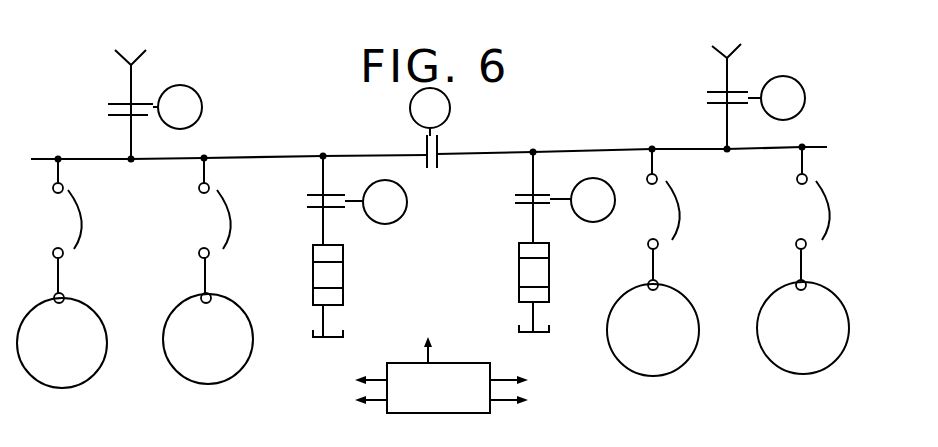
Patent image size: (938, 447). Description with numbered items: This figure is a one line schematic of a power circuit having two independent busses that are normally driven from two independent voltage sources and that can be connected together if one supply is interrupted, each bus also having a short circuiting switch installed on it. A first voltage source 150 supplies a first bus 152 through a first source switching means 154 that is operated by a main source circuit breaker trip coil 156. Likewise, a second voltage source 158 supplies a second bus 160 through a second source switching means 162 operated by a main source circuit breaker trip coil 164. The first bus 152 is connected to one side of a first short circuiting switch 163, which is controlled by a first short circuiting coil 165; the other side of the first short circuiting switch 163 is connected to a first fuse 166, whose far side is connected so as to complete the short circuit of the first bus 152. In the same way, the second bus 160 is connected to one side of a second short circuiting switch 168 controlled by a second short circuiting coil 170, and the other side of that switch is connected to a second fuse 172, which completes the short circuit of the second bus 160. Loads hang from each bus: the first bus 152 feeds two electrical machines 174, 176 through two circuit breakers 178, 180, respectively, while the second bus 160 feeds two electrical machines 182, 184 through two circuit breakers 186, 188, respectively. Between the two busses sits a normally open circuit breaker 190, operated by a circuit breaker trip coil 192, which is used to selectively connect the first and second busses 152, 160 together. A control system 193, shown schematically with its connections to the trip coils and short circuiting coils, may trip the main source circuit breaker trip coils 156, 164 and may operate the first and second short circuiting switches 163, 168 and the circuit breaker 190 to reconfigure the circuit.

The first voltage source 150 is at (132, 94).
The first bus 152 is at (54, 158).
The first source switching means 154 is at (117, 103).
The main source circuit breaker trip coil 156 is at (198, 92).
The second voltage source 158 is at (727, 85).
The second bus 160 is at (812, 146).
The second source switching means 162 is at (715, 91).
The main source circuit breaker trip coil 164 is at (785, 77).
The first short circuiting switch 163 is at (307, 203).
The first short circuiting coil 165 is at (407, 203).
The first fuse 166 is at (343, 275).
The second short circuiting switch 168 is at (514, 199).
The second short circuiting coil 170 is at (581, 221).
The second fuse 172 is at (520, 278).
The electrical machine 174 is at (102, 364).
The electrical machine 176 is at (247, 360).
The circuit breaker 178 is at (83, 217).
The circuit breaker 180 is at (227, 227).
The electrical machine 182 is at (635, 372).
The electrical machine 184 is at (800, 370).
The circuit breaker 186 is at (678, 210).
The circuit breaker 188 is at (823, 207).
The normally open circuit breaker 190 is at (438, 142).
The circuit breaker trip coil 192 is at (450, 102).
The control system 193 is at (440, 413).